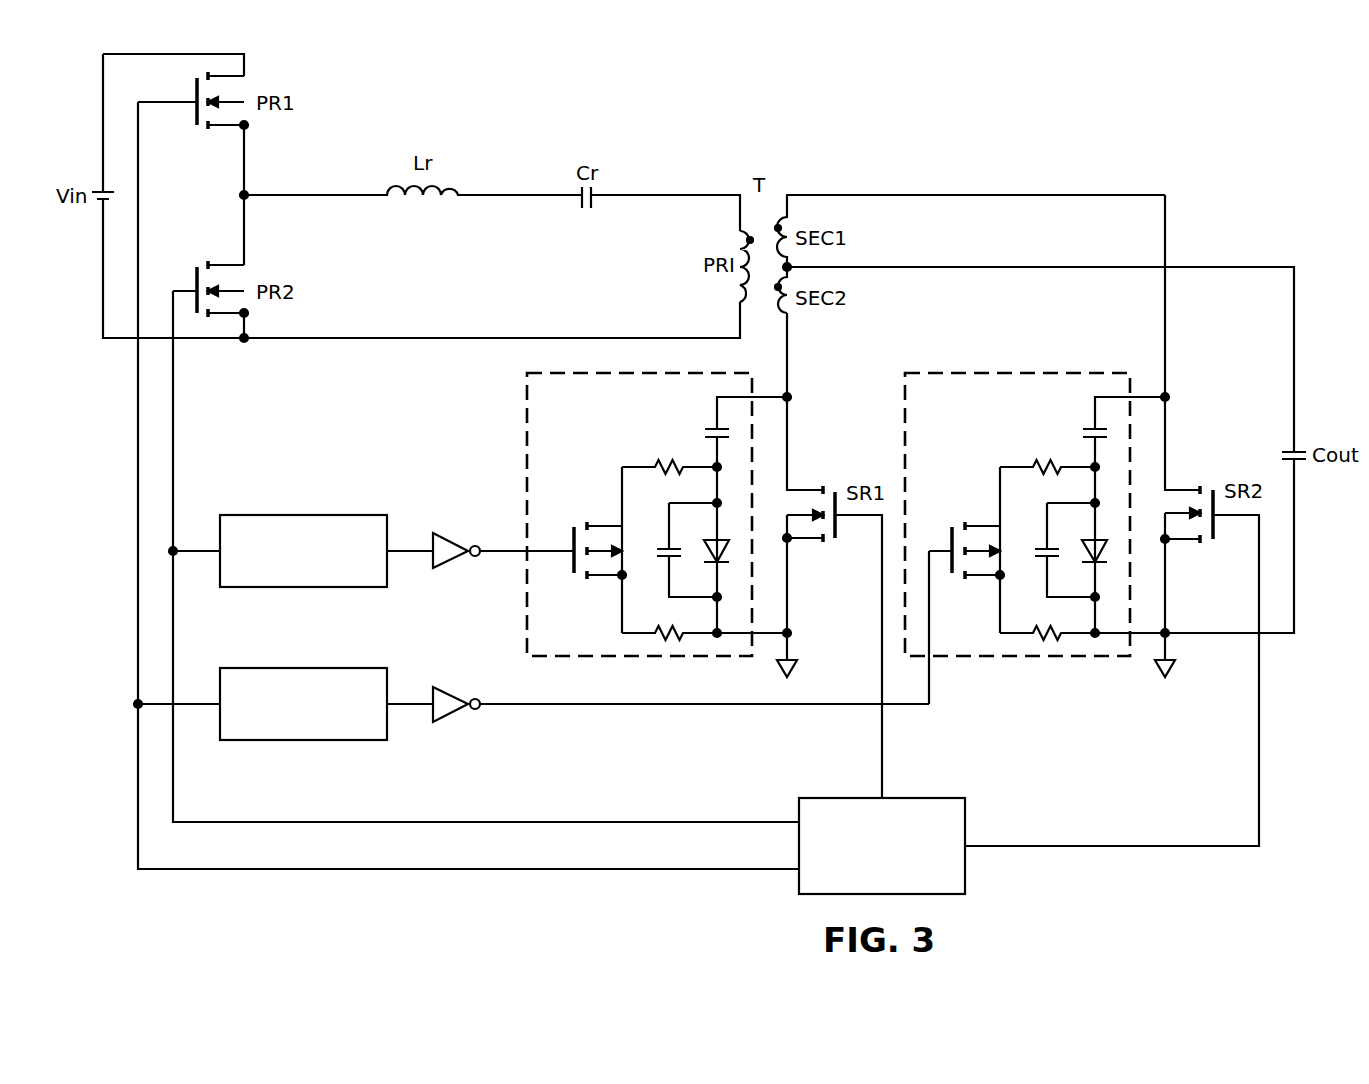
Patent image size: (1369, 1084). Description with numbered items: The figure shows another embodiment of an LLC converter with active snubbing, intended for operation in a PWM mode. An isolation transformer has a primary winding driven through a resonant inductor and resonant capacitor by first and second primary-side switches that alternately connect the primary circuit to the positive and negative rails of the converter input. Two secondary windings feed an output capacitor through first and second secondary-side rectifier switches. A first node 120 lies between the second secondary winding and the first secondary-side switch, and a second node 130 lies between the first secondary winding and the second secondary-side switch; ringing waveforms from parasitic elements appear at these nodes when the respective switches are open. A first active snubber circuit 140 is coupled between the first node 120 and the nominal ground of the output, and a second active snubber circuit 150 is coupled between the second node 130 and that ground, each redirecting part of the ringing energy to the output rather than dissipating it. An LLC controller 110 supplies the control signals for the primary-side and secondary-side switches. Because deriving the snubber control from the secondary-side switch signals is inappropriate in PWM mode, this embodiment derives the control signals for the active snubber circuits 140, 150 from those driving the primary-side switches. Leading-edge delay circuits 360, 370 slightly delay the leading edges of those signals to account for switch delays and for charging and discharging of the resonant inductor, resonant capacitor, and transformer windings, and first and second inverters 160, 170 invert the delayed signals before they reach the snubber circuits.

The LLC controller 110 is at (965, 853).
The first node 120 is at (787, 358).
The second node 130 is at (1165, 358).
The first active snubber circuit 140 is at (527, 487).
The second active snubber circuit 150 is at (1063, 660).
The first inverter 160 is at (455, 567).
The second inverter 170 is at (455, 720).
The leading-edge delay circuit 360 is at (303, 587).
The leading-edge delay circuit 370 is at (303, 740).